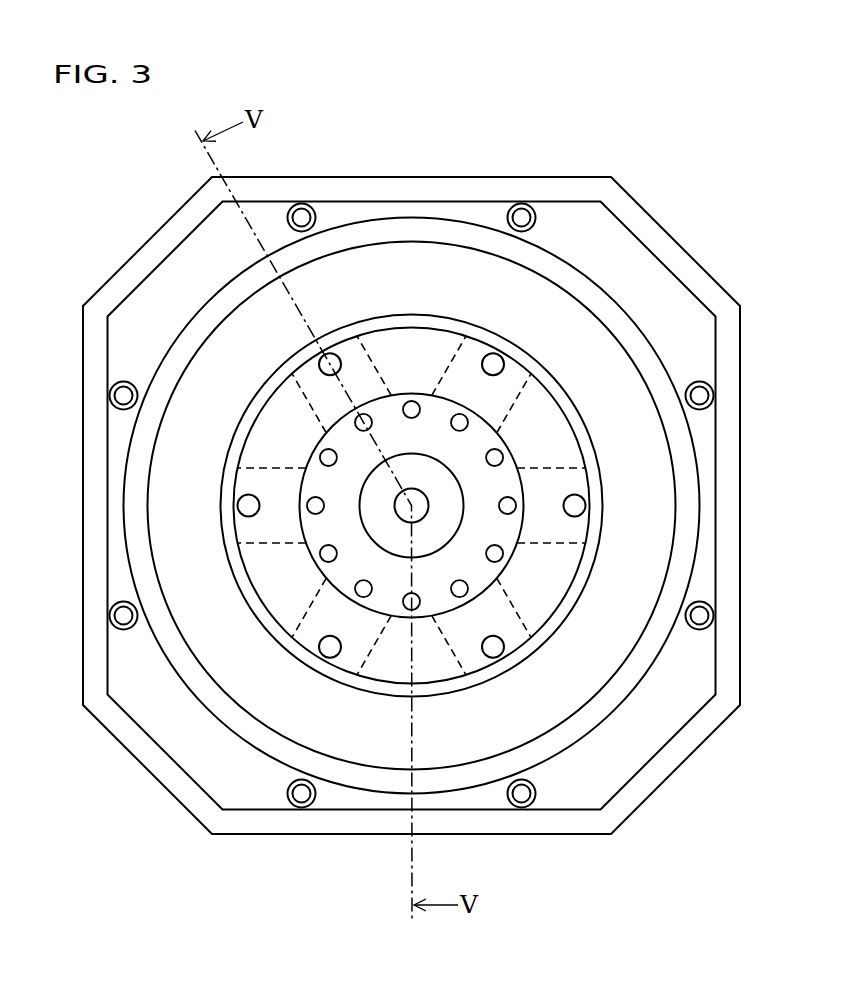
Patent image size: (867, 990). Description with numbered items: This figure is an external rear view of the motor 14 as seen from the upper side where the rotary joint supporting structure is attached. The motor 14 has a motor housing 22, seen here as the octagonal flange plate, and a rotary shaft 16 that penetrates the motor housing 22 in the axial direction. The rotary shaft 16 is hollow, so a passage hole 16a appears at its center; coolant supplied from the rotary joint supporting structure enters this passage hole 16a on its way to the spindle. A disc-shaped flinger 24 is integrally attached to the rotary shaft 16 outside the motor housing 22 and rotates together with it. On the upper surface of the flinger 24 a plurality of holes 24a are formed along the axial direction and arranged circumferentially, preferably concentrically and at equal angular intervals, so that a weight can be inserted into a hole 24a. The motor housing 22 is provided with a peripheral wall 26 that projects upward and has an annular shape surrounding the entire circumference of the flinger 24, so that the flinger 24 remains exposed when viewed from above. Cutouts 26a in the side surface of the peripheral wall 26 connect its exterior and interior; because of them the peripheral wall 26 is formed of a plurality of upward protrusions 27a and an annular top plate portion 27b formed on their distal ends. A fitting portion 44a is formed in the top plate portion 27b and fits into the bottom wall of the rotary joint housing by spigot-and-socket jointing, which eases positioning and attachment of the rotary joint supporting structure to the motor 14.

The motor 14 is at (498, 160).
The motor housing 22 is at (385, 176).
The flinger 24 is at (317, 537).
The holes 24a is at (323, 456).
The peripheral wall 26 is at (283, 670).
The cutouts 26a is at (538, 422).
The protrusions 27a is at (467, 363).
The top plate portion 27b is at (408, 355).
The fitting portion 44a is at (505, 367).
The rotary shaft 16 is at (414, 453).
The passage hole 16a is at (430, 507).